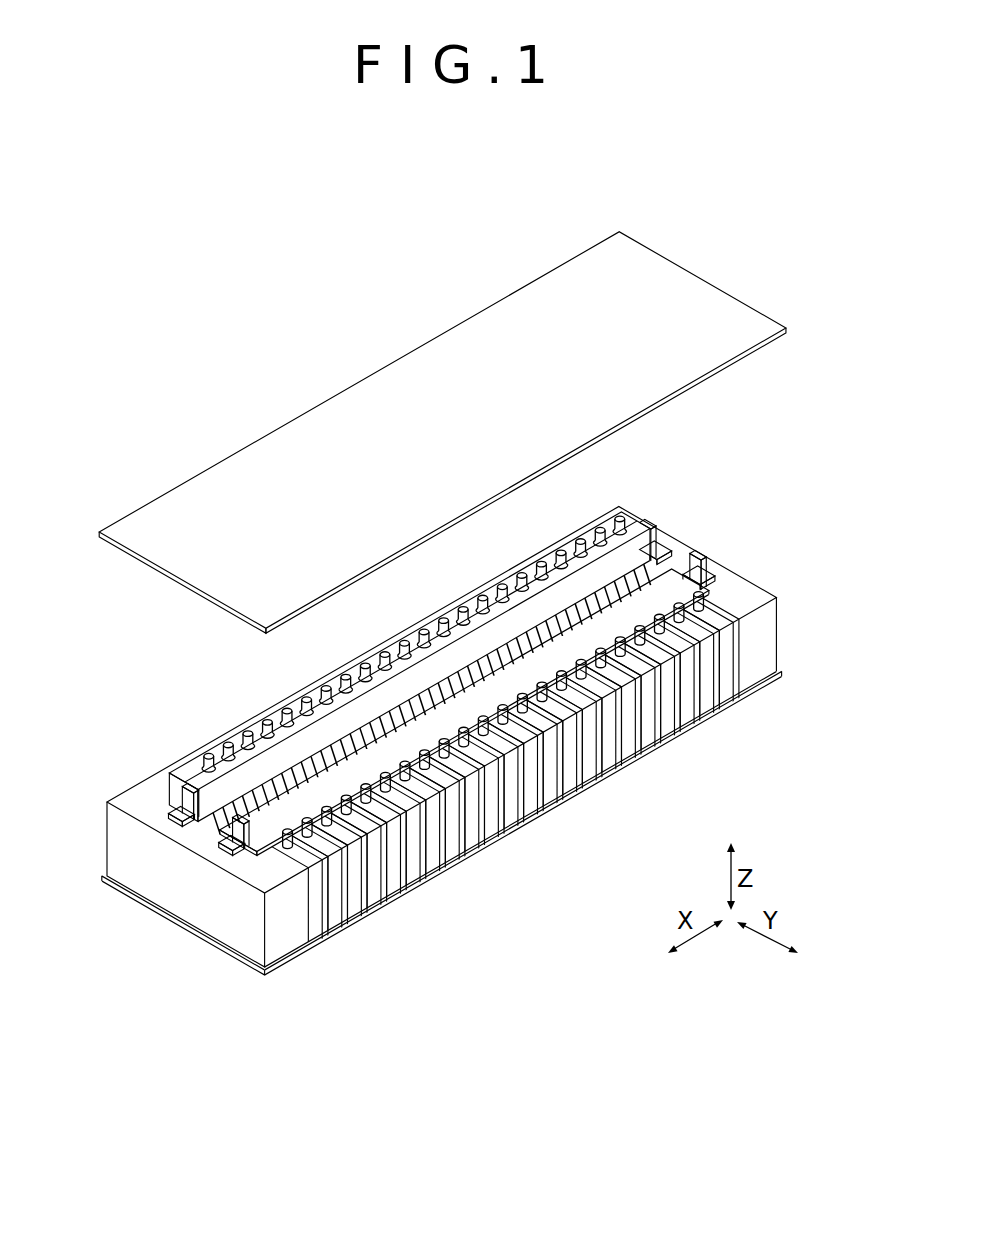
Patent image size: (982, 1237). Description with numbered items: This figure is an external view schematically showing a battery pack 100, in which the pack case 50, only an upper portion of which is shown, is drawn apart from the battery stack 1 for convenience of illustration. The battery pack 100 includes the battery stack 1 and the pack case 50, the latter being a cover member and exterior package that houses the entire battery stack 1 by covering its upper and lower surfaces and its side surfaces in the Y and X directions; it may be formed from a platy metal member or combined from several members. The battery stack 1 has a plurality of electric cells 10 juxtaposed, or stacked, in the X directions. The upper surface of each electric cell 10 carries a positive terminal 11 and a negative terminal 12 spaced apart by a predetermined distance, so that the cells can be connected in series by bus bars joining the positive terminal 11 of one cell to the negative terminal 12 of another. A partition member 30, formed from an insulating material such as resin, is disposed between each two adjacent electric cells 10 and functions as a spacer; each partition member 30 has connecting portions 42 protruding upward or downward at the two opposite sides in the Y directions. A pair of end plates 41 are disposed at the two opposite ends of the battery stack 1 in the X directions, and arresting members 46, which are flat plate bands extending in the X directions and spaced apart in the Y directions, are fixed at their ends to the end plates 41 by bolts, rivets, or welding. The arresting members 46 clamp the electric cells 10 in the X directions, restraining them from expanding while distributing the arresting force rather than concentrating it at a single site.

The battery stack 1 is at (194, 720).
The electric cell 10 is at (640, 573).
The positive terminal 11 is at (568, 550).
The negative terminal 12 is at (590, 538).
The partition member 30 is at (362, 895).
The end plate 41 is at (762, 656).
The connecting portion 42 is at (377, 642).
The arresting member 46 is at (168, 814).
The pack case 50 is at (692, 282).
The battery pack 100 is at (256, 286).